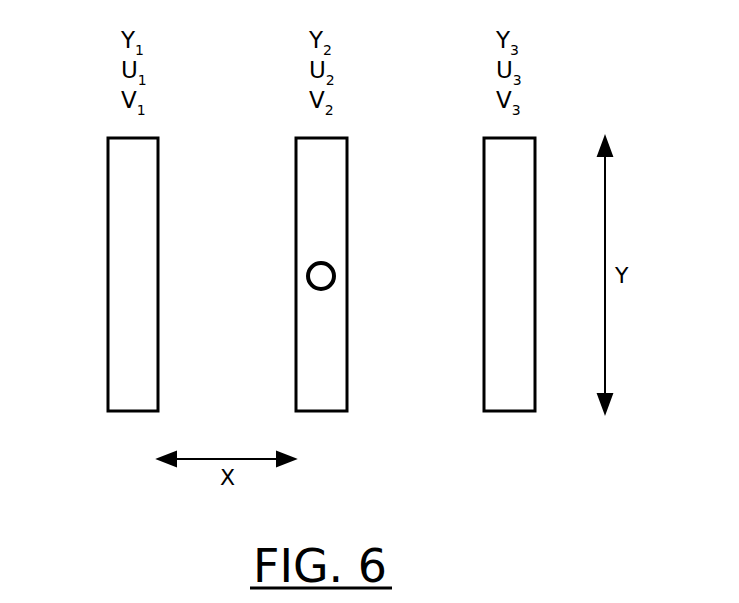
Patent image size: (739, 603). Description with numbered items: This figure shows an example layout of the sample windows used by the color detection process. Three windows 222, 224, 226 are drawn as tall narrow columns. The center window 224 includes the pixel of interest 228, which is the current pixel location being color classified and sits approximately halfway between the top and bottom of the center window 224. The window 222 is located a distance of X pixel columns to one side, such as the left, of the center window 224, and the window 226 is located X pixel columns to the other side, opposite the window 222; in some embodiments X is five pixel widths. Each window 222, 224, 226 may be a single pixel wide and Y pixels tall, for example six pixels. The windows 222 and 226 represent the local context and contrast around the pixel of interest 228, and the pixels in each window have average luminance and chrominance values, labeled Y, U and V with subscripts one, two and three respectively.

The window 222 is at (121, 137).
The center window 224 is at (310, 137).
The window 226 is at (498, 137).
The pixel of interest 228 is at (322, 262).